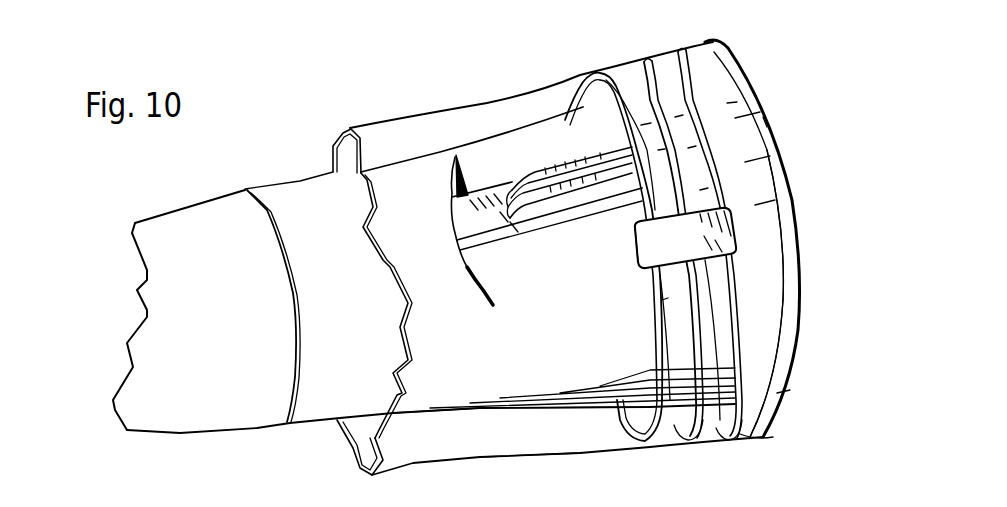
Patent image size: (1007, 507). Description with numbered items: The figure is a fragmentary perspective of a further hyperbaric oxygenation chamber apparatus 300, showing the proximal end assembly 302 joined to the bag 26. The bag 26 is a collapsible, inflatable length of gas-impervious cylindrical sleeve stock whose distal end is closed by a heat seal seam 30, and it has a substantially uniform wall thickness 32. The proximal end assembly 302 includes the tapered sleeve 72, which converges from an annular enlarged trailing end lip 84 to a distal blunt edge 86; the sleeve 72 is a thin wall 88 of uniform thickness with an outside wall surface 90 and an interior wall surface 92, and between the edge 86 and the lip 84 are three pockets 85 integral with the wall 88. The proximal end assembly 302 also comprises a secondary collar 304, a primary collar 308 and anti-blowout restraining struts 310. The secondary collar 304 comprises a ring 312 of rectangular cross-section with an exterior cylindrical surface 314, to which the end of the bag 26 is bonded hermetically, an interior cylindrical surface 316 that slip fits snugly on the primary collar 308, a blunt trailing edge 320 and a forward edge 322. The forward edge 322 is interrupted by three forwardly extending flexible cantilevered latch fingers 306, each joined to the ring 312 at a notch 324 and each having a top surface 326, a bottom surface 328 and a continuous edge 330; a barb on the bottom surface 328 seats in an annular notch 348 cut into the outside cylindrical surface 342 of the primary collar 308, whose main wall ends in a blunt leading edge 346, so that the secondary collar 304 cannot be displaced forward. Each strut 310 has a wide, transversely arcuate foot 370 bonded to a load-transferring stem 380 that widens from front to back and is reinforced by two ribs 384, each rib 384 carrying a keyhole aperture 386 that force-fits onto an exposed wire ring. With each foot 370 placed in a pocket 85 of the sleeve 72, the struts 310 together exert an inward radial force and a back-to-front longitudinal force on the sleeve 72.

The bag 26 is at (453, 110).
The heat seal seam 30 is at (333, 163).
The wall thickness 32 is at (410, 233).
The sleeve 72 is at (257, 428).
The trailing end lip 84 is at (722, 42).
The pocket 85 is at (457, 228).
The blunt edge 86 is at (298, 380).
The thin wall 88 is at (400, 320).
The outside wall surface 90 is at (345, 268).
The interior wall surface 92 is at (287, 312).
The hyperbaric oxygenation chamber apparatus 300 is at (376, 102).
The proximal end assembly 302 is at (672, 46).
The secondary collar 304 is at (733, 421).
The latch finger 306 is at (636, 256).
The primary collar 308 is at (653, 347).
The strut 310 is at (561, 166).
The ring 312 is at (767, 258).
The exterior cylindrical surface 314 is at (775, 310).
The interior cylindrical surface 316 is at (660, 292).
The trailing edge 320 is at (795, 345).
The forward edge 322 is at (777, 393).
The notch 324 is at (738, 232).
The top surface 326 is at (692, 254).
The bottom surface 328 is at (703, 187).
The continuous edge 330 is at (635, 226).
The outside cylindrical surface 342 is at (690, 147).
The leading edge 346 is at (650, 318).
The annular notch 348 is at (687, 423).
The foot 370 is at (456, 185).
The stem 380 is at (500, 226).
The rib 384 is at (543, 217).
The keyhole aperture 386 is at (470, 504).